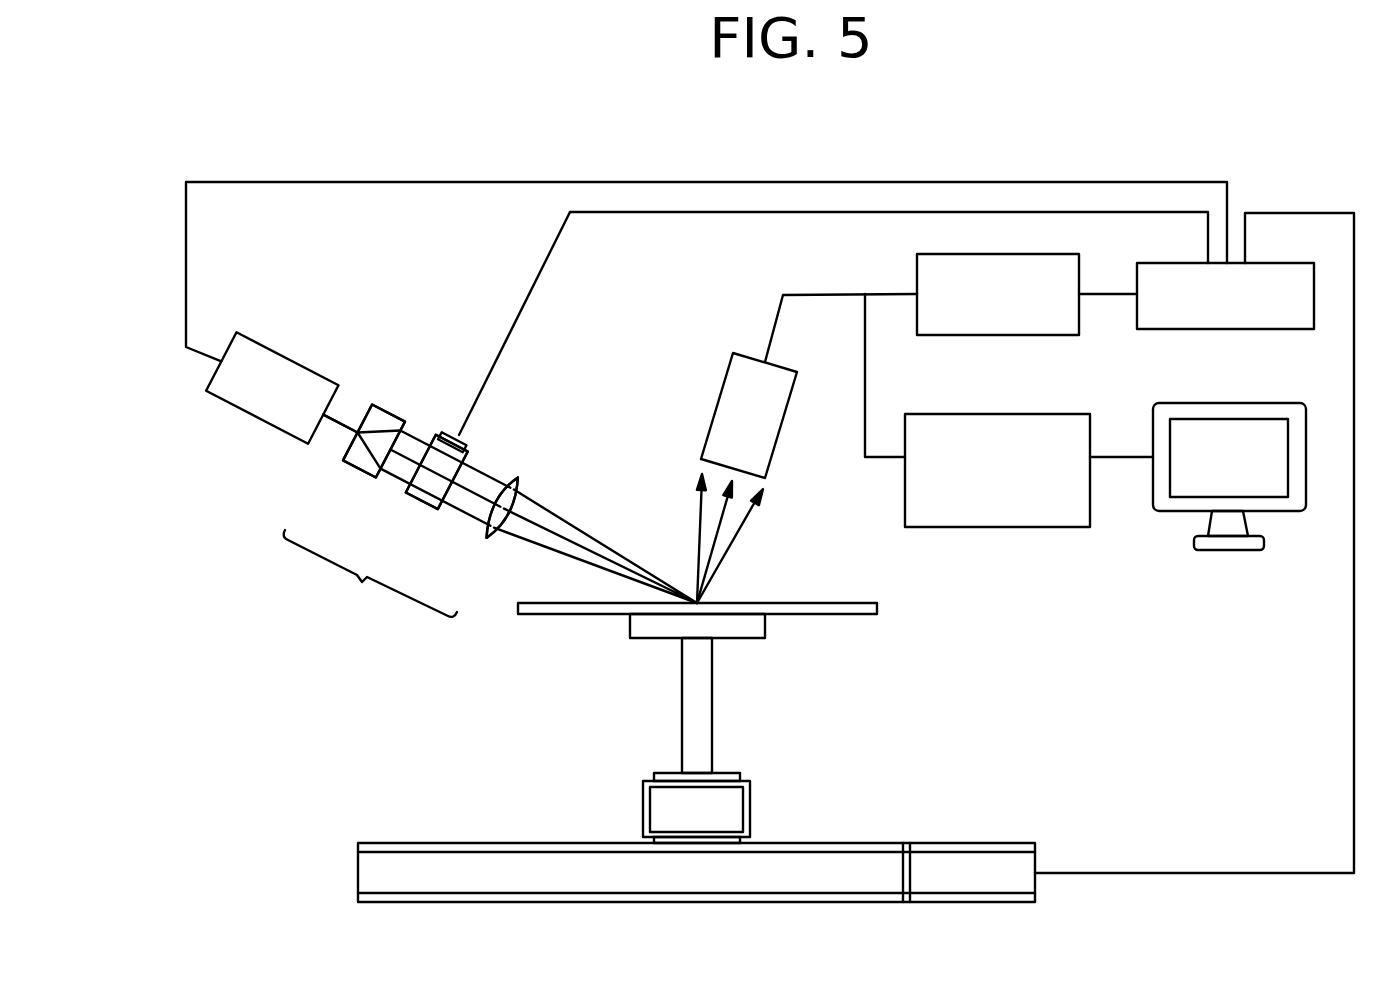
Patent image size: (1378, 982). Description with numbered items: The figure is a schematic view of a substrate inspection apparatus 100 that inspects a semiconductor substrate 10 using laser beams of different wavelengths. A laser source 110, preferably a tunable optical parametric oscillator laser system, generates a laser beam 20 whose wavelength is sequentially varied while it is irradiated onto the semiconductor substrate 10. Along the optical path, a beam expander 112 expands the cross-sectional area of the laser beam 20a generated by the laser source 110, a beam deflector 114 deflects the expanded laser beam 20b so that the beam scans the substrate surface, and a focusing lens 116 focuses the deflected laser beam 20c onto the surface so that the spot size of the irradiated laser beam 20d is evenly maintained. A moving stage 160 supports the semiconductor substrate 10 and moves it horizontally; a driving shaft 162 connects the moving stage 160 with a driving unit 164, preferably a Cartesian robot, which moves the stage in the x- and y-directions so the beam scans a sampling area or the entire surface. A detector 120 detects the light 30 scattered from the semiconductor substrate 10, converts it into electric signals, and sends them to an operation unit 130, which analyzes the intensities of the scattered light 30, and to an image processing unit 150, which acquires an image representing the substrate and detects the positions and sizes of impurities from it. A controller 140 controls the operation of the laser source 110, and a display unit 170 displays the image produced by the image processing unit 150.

The substrate inspection apparatus 100 is at (775, 160).
The laser source 110 is at (293, 372).
The beam expander 112 is at (377, 407).
The beam deflector 114 is at (441, 431).
The focusing lens 116 is at (517, 473).
The laser beam 20 is at (370, 576).
The laser beam generated by the laser source 20a is at (338, 428).
The expanded laser beam 20b is at (389, 480).
The deflected laser beam 20c is at (460, 513).
The irradiated laser beam 20d is at (510, 540).
The scattered light 30 is at (697, 525).
The detector 120 is at (718, 417).
The semiconductor substrate 10 is at (877, 608).
The moving stage 160 is at (760, 630).
The driving shaft 162 is at (708, 715).
The driving unit 164 is at (877, 847).
The operation unit 130 is at (998, 335).
The controller 140 is at (1222, 330).
The image processing unit 150 is at (998, 527).
The display unit 170 is at (1158, 503).